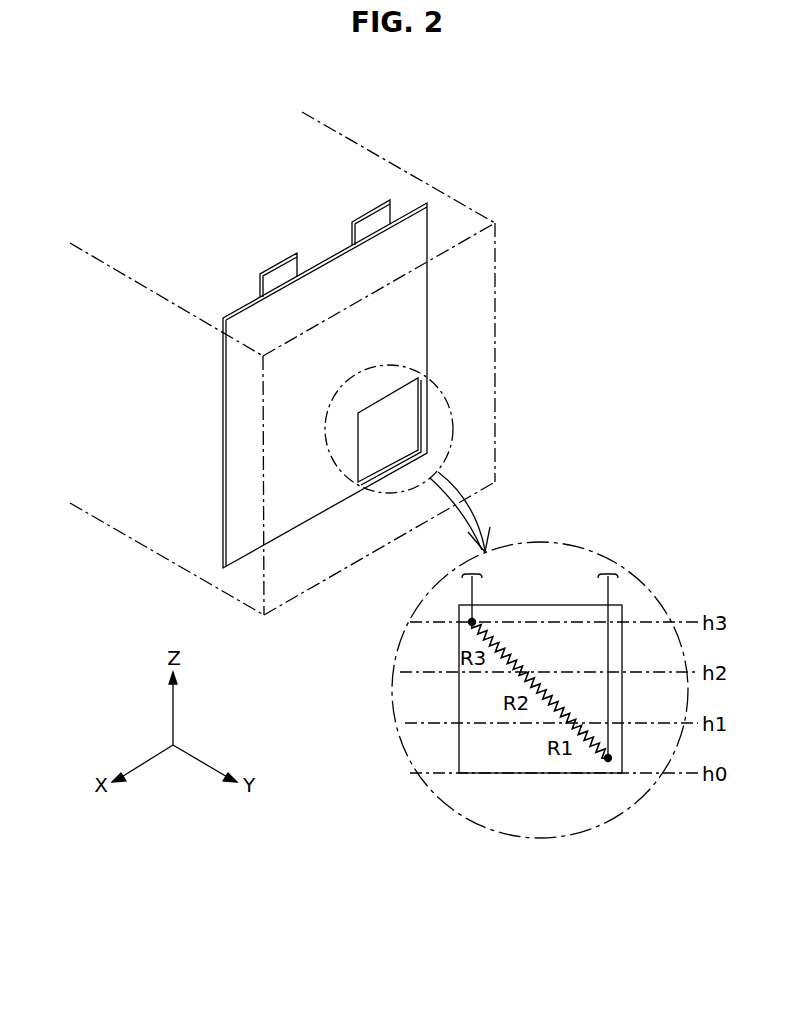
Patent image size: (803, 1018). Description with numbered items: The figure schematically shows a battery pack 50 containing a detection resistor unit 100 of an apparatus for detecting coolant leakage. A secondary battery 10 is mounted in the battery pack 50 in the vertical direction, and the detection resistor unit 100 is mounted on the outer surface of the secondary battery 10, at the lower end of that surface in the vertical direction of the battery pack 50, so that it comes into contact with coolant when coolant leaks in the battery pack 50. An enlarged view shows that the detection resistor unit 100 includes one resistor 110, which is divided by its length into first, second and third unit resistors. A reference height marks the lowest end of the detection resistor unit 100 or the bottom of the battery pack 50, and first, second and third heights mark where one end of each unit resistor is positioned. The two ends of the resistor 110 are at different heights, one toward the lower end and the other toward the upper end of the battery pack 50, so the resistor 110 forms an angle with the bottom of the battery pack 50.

The battery pack 50 is at (357, 142).
The secondary battery 10 is at (405, 320).
The detection resistor unit 100 is at (403, 421).
The resistor 110 is at (586, 748).